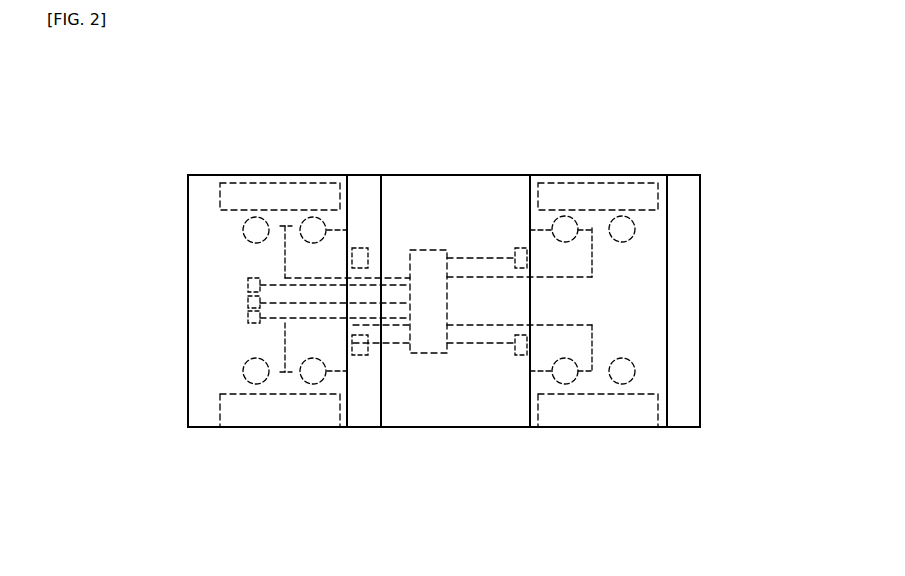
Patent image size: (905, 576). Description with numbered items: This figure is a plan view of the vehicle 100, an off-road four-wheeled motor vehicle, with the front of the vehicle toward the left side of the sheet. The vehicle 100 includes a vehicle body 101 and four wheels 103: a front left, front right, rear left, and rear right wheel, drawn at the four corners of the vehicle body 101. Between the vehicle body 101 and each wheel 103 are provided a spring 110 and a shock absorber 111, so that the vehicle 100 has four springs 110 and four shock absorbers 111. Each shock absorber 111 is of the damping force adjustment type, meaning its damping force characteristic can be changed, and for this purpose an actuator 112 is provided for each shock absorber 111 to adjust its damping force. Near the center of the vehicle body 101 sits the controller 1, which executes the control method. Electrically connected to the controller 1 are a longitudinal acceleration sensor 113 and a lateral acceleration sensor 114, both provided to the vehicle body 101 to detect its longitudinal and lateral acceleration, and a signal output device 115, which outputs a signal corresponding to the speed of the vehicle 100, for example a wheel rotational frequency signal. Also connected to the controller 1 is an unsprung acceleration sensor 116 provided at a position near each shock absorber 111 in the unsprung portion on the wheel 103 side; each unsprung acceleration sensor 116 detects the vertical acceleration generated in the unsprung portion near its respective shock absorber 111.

The controller 1 is at (433, 250).
The vehicle 100 is at (740, 181).
The vehicle body 101 is at (188, 200).
The wheel 103 is at (280, 188).
The spring 110 is at (257, 217).
The shock absorber 111 is at (313, 217).
The actuator 112 is at (367, 250).
The longitudinal acceleration sensor 113 is at (250, 286).
The lateral acceleration sensor 114 is at (250, 303).
The signal output device 115 is at (250, 321).
The unsprung acceleration sensor 116 is at (243, 240).